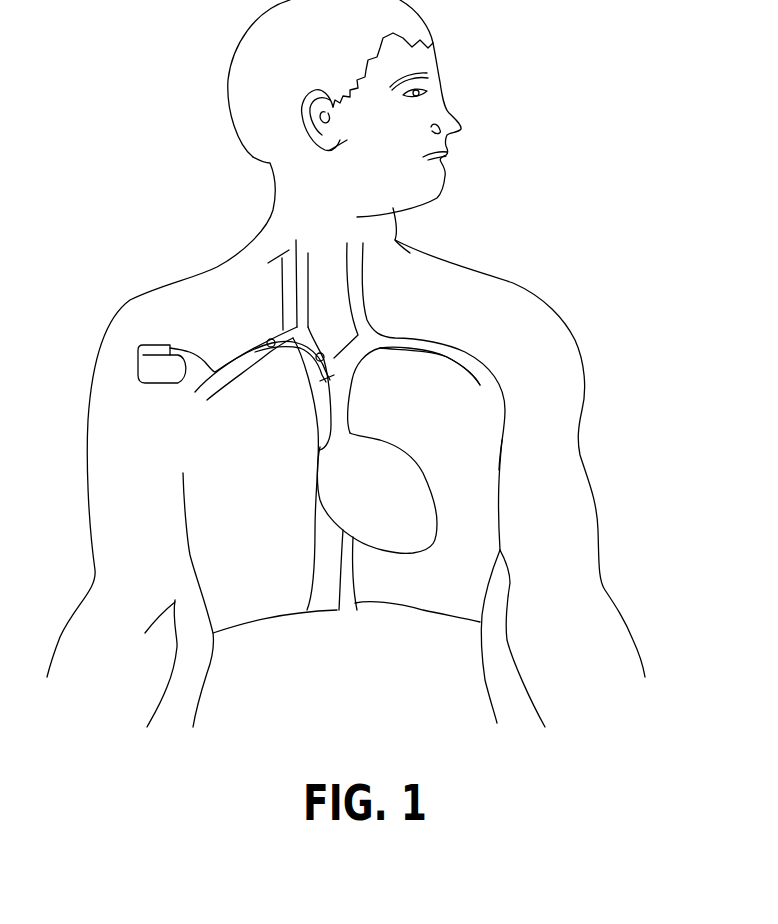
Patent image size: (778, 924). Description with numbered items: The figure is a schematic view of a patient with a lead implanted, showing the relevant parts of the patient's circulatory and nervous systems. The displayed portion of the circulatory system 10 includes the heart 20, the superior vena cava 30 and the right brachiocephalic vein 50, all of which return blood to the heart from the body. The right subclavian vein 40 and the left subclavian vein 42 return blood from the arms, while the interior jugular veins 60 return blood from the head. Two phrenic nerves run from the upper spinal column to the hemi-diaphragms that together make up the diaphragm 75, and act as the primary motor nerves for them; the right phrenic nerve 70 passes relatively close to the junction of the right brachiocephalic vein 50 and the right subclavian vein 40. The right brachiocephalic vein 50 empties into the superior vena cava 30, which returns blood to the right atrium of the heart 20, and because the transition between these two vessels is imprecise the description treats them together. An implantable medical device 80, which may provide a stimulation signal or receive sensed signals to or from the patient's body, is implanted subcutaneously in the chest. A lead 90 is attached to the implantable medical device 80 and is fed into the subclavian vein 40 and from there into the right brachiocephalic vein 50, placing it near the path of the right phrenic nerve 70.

The circulatory system 10 is at (434, 304).
The heart 20 is at (398, 477).
The superior vena cava 30 is at (312, 370).
The right subclavian vein 40 is at (240, 347).
The left subclavian vein 42 is at (460, 345).
The right brachiocephalic vein 50 is at (313, 332).
The interior jugular veins 60 is at (363, 303).
The right phrenic nerve 70 is at (280, 296).
The diaphragm 75 is at (247, 630).
The implantable medical device 80 is at (150, 367).
The lead 90 is at (243, 366).